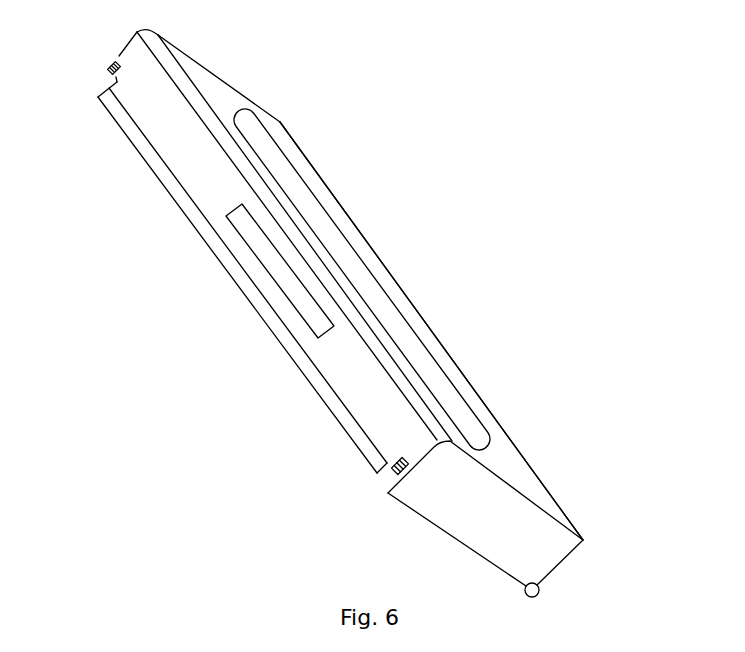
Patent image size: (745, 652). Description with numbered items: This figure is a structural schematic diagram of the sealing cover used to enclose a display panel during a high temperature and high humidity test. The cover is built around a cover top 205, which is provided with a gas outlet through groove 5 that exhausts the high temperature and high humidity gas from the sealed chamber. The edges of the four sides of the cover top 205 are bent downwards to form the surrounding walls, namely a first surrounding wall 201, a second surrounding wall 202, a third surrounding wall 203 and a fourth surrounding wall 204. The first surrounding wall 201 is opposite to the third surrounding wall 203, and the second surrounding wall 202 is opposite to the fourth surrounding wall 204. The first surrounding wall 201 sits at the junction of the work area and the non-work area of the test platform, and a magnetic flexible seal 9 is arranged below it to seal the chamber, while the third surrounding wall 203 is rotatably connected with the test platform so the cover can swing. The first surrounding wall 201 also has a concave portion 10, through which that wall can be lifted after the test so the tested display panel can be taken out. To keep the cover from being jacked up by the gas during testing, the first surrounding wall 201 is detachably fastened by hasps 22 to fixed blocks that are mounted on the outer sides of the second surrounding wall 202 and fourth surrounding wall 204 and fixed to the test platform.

The gas outlet through groove 5 is at (376, 270).
The magnetic flexible seal 9 is at (253, 325).
The concave portion 10 is at (255, 270).
The hasp 22 is at (384, 479).
The first surrounding wall 201 is at (195, 178).
The second surrounding wall 202 is at (228, 67).
The third surrounding wall 203 is at (470, 352).
The fourth surrounding wall 204 is at (553, 553).
The cover top 205 is at (353, 210).